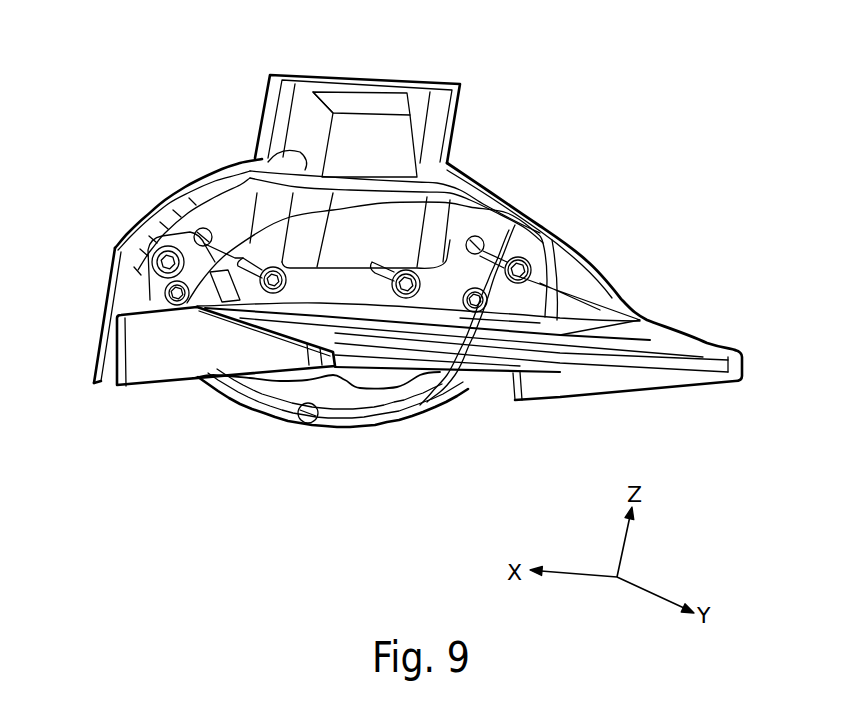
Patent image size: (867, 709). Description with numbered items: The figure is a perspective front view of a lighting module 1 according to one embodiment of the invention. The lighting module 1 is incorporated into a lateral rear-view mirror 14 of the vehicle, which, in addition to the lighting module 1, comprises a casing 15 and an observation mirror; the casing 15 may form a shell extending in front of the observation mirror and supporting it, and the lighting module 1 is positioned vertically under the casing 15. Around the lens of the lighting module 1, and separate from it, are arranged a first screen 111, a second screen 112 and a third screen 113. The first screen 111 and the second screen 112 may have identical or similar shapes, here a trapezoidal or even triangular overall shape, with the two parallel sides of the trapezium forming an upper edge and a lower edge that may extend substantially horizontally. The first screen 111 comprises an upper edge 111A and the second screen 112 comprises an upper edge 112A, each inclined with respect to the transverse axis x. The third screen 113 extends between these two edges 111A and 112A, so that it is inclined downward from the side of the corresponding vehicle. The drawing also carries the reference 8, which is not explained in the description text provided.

The lighting module 1 is at (585, 190).
The housing 8 is at (396, 372).
The lateral rear-view mirror 14 is at (228, 80).
The casing 15 is at (458, 124).
The first screen 111 is at (560, 381).
The upper edge of the first screen 111A is at (680, 341).
The second screen 112 is at (212, 360).
The upper edge of the second screen 112A is at (243, 317).
The third screen 113 is at (652, 322).